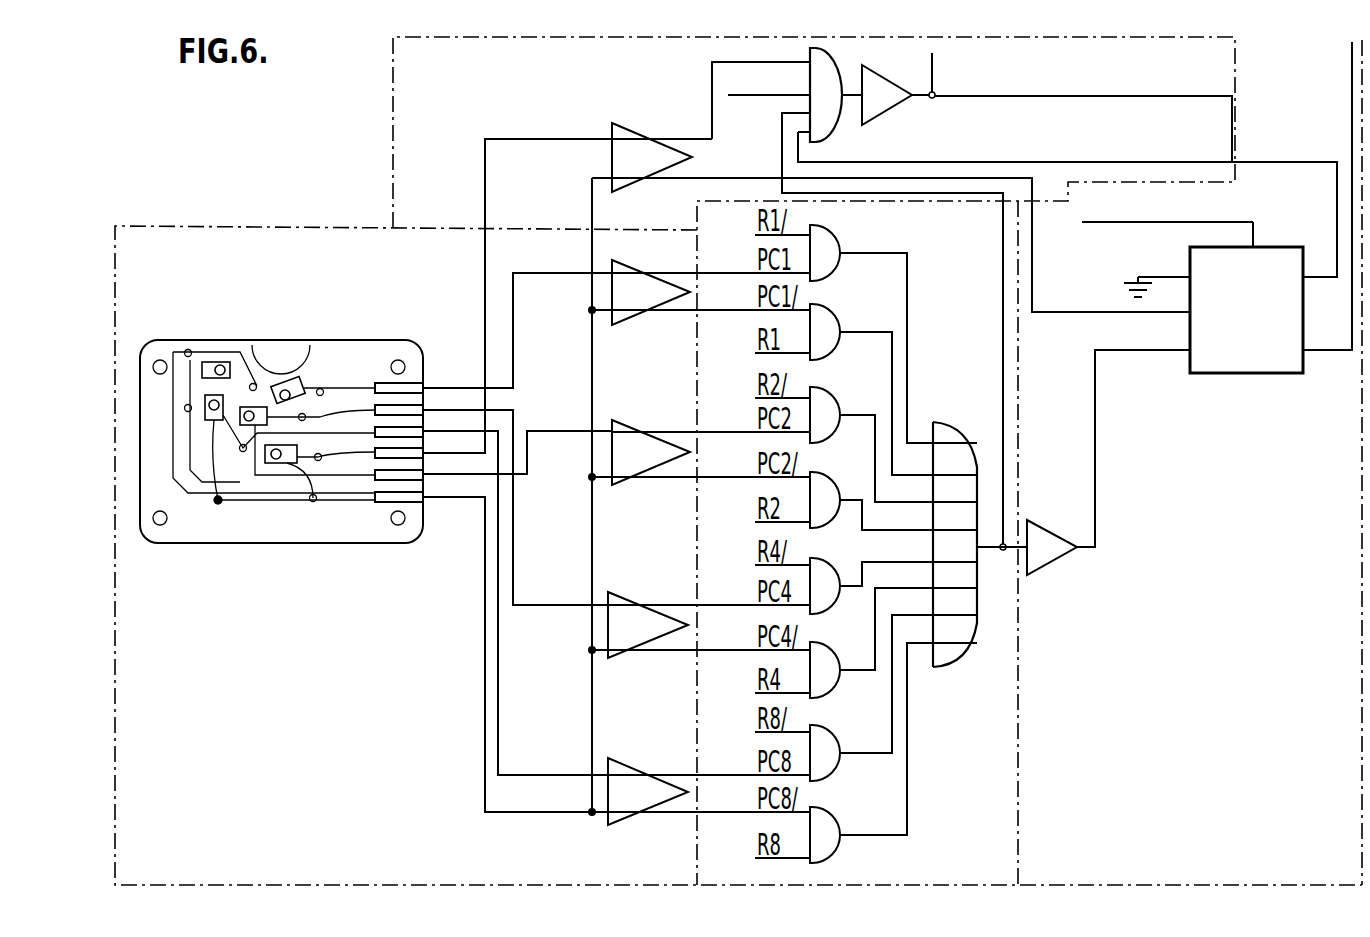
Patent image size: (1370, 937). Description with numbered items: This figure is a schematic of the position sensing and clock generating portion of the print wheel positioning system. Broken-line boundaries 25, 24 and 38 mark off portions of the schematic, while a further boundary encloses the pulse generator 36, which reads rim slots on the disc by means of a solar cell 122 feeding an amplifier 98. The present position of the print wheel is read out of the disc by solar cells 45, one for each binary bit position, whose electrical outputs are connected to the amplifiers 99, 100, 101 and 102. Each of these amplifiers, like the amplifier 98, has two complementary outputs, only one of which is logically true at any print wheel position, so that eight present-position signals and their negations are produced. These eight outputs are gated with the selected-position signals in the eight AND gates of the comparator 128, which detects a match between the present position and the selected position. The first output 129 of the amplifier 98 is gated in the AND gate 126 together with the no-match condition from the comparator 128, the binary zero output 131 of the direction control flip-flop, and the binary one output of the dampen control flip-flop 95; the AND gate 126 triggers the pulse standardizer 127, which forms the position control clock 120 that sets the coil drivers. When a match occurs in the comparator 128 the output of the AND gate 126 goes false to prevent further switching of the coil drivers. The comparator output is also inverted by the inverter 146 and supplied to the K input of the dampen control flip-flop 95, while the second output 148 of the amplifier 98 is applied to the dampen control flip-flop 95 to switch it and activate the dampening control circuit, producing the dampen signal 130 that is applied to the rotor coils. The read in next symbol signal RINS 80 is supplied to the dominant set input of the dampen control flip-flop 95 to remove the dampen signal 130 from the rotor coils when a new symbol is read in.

The pulse generator 36 is at (393, 100).
The keyboard switch assembly 25 is at (116, 742).
The gating circuit region 24 is at (1018, 750).
The dampen control region 38 is at (1362, 728).
The solar cell 122 is at (286, 464).
The solar cell 45 is at (295, 392).
The amplifier 98 is at (632, 135).
The amplifier 99 is at (630, 277).
The amplifier 100 is at (630, 428).
The amplifier 101 is at (623, 598).
The amplifier 102 is at (623, 765).
The comparator 128 is at (960, 686).
The inverter 146 is at (1045, 564).
The first output of amplifier 129 is at (712, 68).
The DC/ output 131 is at (770, 96).
The AND gate 126 is at (828, 136).
The pulse standardizer 127 is at (882, 110).
The position control clock 120 is at (1134, 100).
The second output of amplifier 148 is at (687, 180).
The dampen control flip-flop 95 is at (1270, 375).
The RINS 80 is at (1255, 232).
The dampen signal 130 is at (1352, 68).